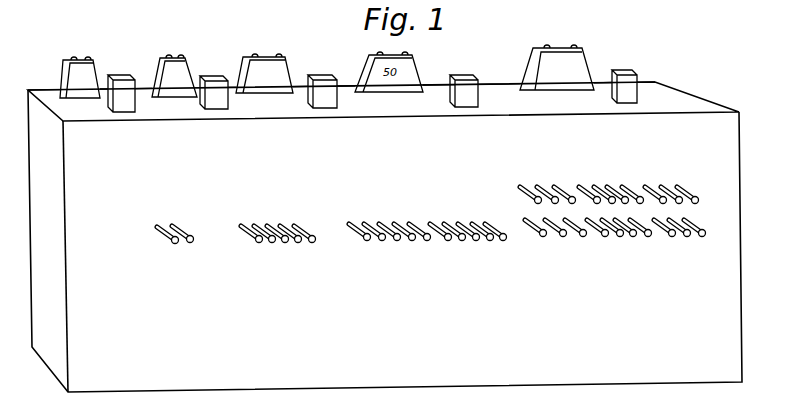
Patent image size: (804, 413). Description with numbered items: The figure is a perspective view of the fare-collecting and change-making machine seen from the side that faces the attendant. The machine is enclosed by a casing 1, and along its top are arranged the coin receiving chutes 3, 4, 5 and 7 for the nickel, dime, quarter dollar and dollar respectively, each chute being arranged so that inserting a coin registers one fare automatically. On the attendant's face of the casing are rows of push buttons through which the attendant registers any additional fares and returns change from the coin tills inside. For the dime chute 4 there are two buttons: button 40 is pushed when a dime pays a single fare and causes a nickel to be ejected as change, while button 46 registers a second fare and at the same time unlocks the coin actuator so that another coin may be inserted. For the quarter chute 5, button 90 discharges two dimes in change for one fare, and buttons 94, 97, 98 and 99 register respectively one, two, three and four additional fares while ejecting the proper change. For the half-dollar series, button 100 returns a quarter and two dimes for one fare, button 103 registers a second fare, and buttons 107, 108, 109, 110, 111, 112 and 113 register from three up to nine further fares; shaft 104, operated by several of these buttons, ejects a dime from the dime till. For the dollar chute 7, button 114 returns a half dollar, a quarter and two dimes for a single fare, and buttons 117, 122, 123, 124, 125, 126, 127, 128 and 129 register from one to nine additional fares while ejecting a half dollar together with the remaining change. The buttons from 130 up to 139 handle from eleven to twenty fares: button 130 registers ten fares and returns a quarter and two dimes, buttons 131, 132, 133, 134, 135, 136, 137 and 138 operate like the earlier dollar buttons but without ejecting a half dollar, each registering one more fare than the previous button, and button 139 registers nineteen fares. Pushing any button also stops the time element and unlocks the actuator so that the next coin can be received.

The casing 1 is at (56, 360).
The coin receiving chute 3 is at (93, 75).
The coin receiving chute 4 is at (193, 73).
The coin receiving chute 5 is at (281, 74).
The coin receiving chute 7 is at (580, 63).
The button 40 is at (172, 244).
The button 46 is at (190, 243).
The push button 90 is at (255, 241).
The push button 94 is at (270, 243).
The push button 97 is at (285, 243).
The push button 98 is at (299, 243).
The push button 99 is at (313, 243).
The push button 100 is at (363, 238).
The push button 103 is at (380, 241).
The shaft 104 is at (396, 241).
The push button 107 is at (412, 241).
The push button 108 is at (427, 241).
The push button 109 is at (447, 241).
The push button 110 is at (461, 241).
The push button 111 is at (475, 241).
The push button 112 is at (489, 241).
The push button 113 is at (505, 240).
The push button 114 is at (534, 202).
The push button 117 is at (553, 204).
The push button 122 is at (571, 204).
The push button 123 is at (596, 204).
The push button 124 is at (612, 196).
The push button 125 is at (626, 204).
The push button 126 is at (640, 196).
The push button 127 is at (664, 204).
The push button 128 is at (678, 196).
The push button 129 is at (698, 203).
The push button 130 is at (543, 237).
The push button 131 is at (562, 237).
The push button 132 is at (583, 237).
The push button 133 is at (604, 237).
The push button 134 is at (621, 237).
The push button 135 is at (634, 237).
The push button 136 is at (649, 237).
The push button 137 is at (672, 237).
The push button 138 is at (688, 237).
The push button 139 is at (705, 236).